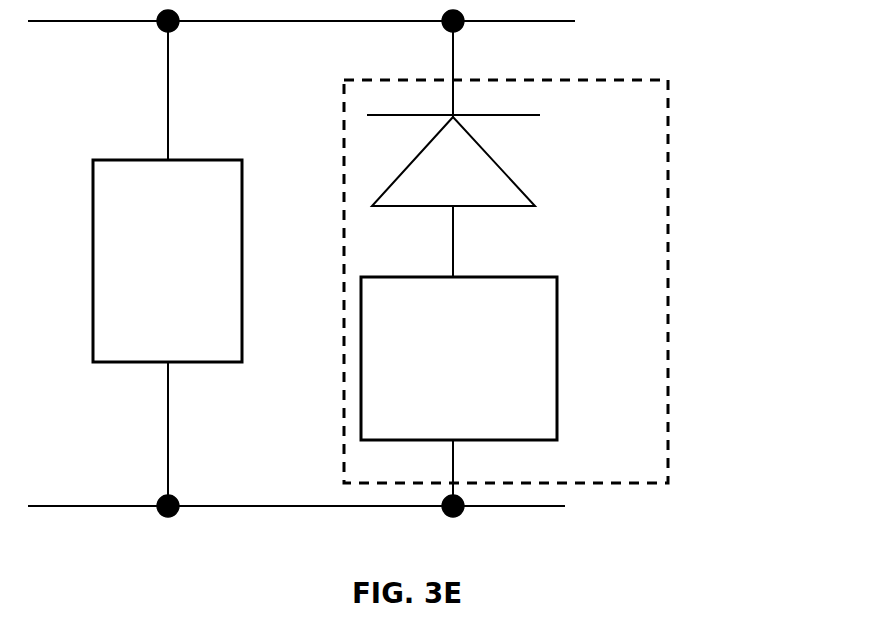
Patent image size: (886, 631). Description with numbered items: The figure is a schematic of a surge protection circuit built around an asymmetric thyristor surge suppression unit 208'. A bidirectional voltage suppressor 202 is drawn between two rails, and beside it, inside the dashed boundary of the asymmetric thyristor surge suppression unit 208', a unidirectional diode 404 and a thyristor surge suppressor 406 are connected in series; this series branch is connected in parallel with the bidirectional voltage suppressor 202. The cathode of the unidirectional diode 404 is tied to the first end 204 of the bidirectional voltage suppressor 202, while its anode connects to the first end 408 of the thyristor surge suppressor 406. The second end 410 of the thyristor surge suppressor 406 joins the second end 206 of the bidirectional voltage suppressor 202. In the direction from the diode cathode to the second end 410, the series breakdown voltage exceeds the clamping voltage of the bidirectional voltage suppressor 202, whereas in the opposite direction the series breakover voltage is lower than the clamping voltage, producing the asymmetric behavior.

The first end of the bidirectional voltage suppressor 204 is at (168, 66).
The bidirectional voltage suppressor 202 is at (243, 345).
The second end of the bidirectional voltage suppressor 206 is at (168, 438).
The asymmetric thyristor surge suppression unit 208' is at (564, 281).
The unidirectional diode 404 is at (503, 168).
The first end of the thyristor surge suppressor 408 is at (453, 220).
The thyristor surge suppressor 406 is at (557, 312).
The second end of the thyristor surge suppressor 410 is at (453, 456).